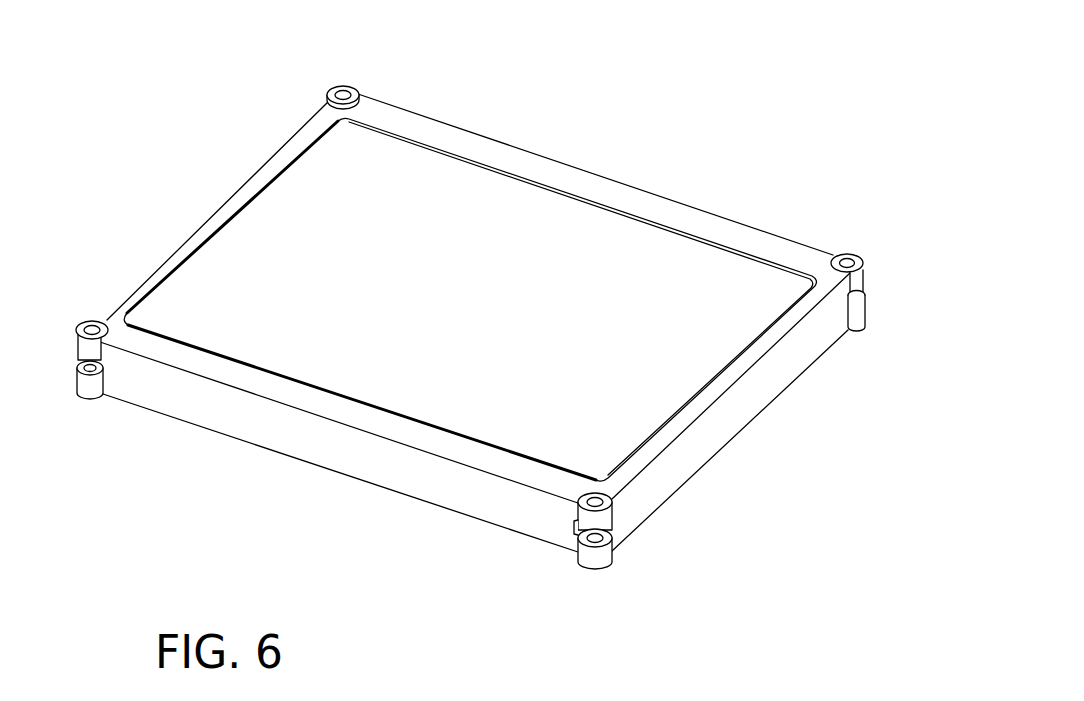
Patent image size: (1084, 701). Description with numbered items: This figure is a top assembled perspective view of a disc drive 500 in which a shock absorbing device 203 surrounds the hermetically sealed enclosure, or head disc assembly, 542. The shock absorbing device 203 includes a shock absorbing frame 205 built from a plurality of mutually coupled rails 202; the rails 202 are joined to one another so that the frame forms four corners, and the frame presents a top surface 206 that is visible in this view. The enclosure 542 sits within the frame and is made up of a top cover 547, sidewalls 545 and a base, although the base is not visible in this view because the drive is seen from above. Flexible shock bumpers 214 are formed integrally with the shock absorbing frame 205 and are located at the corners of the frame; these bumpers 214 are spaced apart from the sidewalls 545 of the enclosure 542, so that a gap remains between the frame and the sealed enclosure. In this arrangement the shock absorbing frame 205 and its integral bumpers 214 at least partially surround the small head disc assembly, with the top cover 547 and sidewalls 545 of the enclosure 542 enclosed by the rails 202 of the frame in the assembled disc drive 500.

The disc drive 500 is at (704, 104).
The rails 202 is at (613, 177).
The shock absorbing device 203 is at (800, 377).
The shock absorbing frame 205 is at (687, 203).
The top surface 206 is at (510, 160).
The flexible shock bumpers 214 is at (332, 85).
The hermetically sealed enclosure 542 is at (483, 294).
The sidewalls 545 is at (378, 115).
The top cover 547 is at (393, 162).